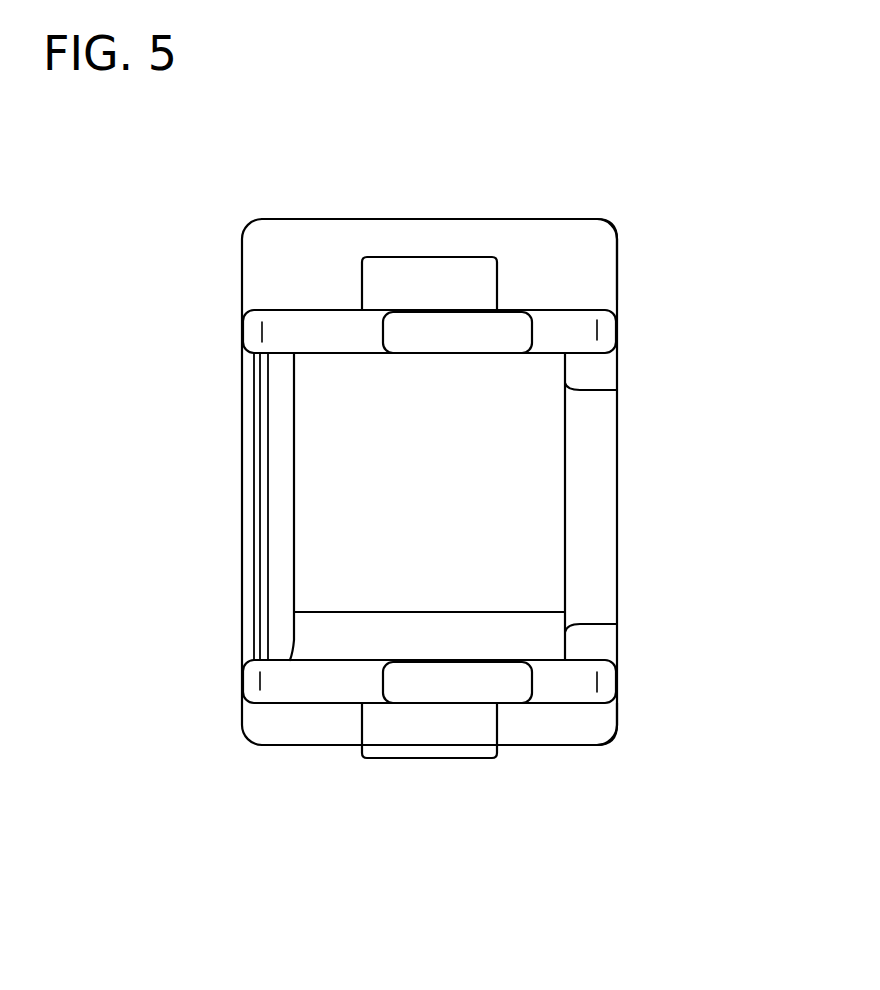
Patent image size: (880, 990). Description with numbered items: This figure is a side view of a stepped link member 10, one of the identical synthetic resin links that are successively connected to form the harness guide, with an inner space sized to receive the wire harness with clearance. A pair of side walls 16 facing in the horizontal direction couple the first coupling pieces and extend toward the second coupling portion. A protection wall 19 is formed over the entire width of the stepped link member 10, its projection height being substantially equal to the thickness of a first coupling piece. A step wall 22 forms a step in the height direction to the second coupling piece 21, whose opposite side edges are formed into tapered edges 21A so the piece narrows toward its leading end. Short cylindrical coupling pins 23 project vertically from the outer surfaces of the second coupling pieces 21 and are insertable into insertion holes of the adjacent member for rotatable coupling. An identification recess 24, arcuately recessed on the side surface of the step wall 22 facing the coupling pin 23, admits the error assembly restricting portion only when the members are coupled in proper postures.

The stepped link member 10 is at (658, 224).
The side wall 16 is at (247, 495).
The protection wall 19 is at (573, 725).
The second coupling piece 21 is at (327, 316).
The tapered edge 21A is at (305, 337).
The step wall 22 is at (548, 243).
The coupling pin 23 is at (450, 277).
The identification recess 24 is at (417, 237).